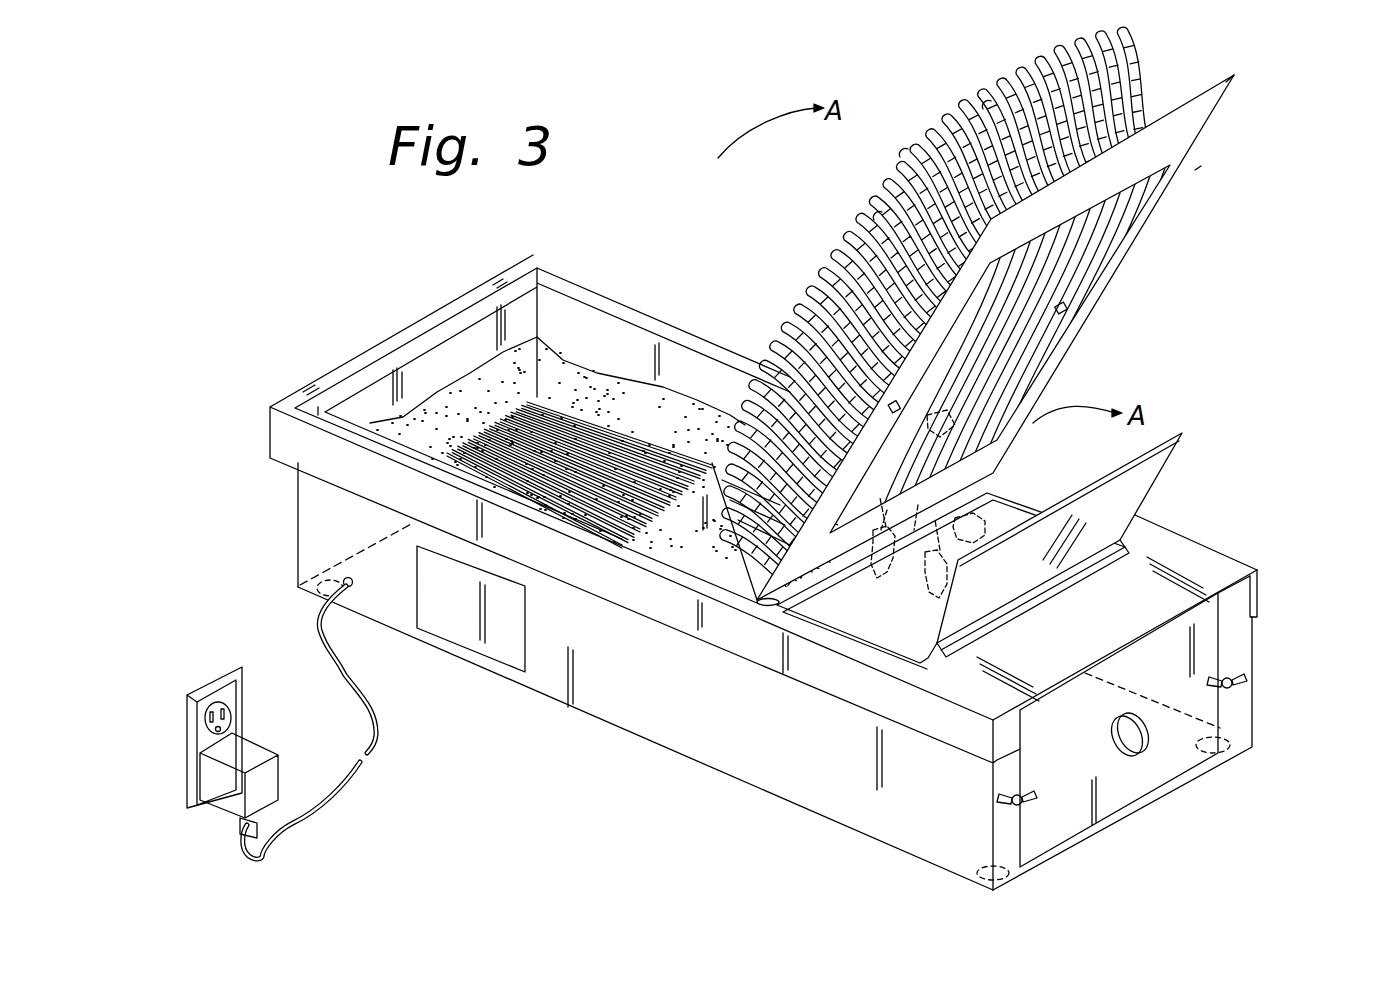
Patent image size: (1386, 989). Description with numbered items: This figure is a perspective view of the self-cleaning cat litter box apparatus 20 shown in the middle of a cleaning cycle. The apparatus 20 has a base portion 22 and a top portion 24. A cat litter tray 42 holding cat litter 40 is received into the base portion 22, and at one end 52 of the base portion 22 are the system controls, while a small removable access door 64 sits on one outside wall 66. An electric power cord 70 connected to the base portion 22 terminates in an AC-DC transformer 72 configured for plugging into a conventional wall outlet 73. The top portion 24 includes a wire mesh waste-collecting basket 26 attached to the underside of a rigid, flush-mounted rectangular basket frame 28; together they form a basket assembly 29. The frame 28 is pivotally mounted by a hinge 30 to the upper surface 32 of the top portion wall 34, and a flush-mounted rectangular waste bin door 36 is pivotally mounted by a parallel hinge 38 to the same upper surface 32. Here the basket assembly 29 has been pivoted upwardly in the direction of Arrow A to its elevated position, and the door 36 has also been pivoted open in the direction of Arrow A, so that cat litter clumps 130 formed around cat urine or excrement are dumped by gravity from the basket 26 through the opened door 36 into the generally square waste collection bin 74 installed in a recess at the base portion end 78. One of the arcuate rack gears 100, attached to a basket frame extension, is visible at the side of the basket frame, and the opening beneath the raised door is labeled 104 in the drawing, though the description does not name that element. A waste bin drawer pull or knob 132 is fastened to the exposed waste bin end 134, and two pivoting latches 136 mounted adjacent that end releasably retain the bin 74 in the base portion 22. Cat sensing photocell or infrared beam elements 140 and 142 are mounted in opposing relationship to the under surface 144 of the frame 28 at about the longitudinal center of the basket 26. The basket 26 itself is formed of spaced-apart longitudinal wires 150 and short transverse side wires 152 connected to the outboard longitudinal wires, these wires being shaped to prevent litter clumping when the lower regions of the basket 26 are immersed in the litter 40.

The apparatus 20 is at (731, 233).
The base portion 22 is at (1264, 657).
The top portion 24 is at (455, 280).
The waste-collecting basket 26 is at (1130, 60).
The basket frame 28 is at (1212, 131).
The basket assembly 29 is at (1204, 167).
The hinge 30 is at (787, 606).
The upper surface 32 is at (1220, 562).
The top portion wall 34 is at (1195, 617).
The waste bin door 36 is at (1175, 457).
The hinge 38 is at (1133, 526).
The cat litter 40 is at (607, 360).
The cat litter tray 42 is at (517, 313).
The end 52 is at (298, 530).
The access door 64 is at (455, 627).
The outside wall 66 is at (542, 694).
The electric power cord 70 is at (355, 688).
The AC-DC transformer 72 is at (264, 746).
The wall outlet 73 is at (240, 670).
The waste collection bin 74 is at (1132, 789).
The base portion end 78 is at (1003, 840).
The arcuate rack gear 100 is at (720, 557).
The recess 104 is at (1030, 492).
The cat litter clumps 130 is at (900, 582).
The waste bin drawer pull 132 is at (1143, 740).
The waste bin end 134 is at (1068, 826).
The pivoting latches 136 is at (1238, 690).
The cat sensing photocell or infrared beam element 140 is at (1063, 314).
The cat sensing photocell or infrared beam element 142 is at (960, 392).
The under surface 144 is at (1228, 72).
The longitudinal wires 150 is at (987, 107).
The side wires 152 is at (877, 217).